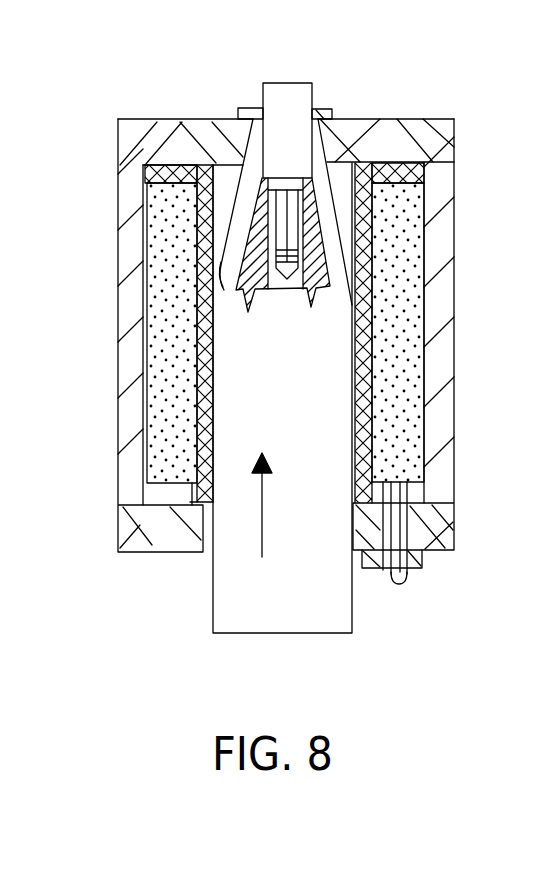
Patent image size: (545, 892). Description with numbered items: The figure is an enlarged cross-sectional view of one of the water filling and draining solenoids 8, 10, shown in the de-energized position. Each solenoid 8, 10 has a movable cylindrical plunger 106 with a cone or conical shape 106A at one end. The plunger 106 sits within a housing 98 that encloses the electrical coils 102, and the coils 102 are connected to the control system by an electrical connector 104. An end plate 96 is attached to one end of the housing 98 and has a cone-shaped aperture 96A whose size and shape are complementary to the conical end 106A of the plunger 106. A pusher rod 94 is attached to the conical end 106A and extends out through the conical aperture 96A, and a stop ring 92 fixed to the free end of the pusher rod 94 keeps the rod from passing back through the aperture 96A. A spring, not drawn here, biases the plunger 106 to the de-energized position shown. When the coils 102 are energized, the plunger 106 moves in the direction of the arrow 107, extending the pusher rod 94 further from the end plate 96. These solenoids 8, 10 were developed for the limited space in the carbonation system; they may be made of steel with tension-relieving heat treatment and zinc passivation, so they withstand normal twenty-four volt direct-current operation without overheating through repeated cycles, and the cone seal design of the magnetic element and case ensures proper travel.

The water filling solenoid 8 is at (194, 79).
The water draining solenoid 10 is at (330, 343).
The stop ring 92 is at (332, 112).
The pusher rod 94 is at (300, 92).
The end plate 96 is at (455, 138).
The conical aperture 96A is at (336, 185).
The housing 98 is at (437, 287).
The electrical coils 102 is at (397, 408).
The electrical connector 104 is at (410, 580).
The plunger 106 is at (315, 615).
The conical end 106A is at (226, 272).
The arrow 107 is at (262, 512).